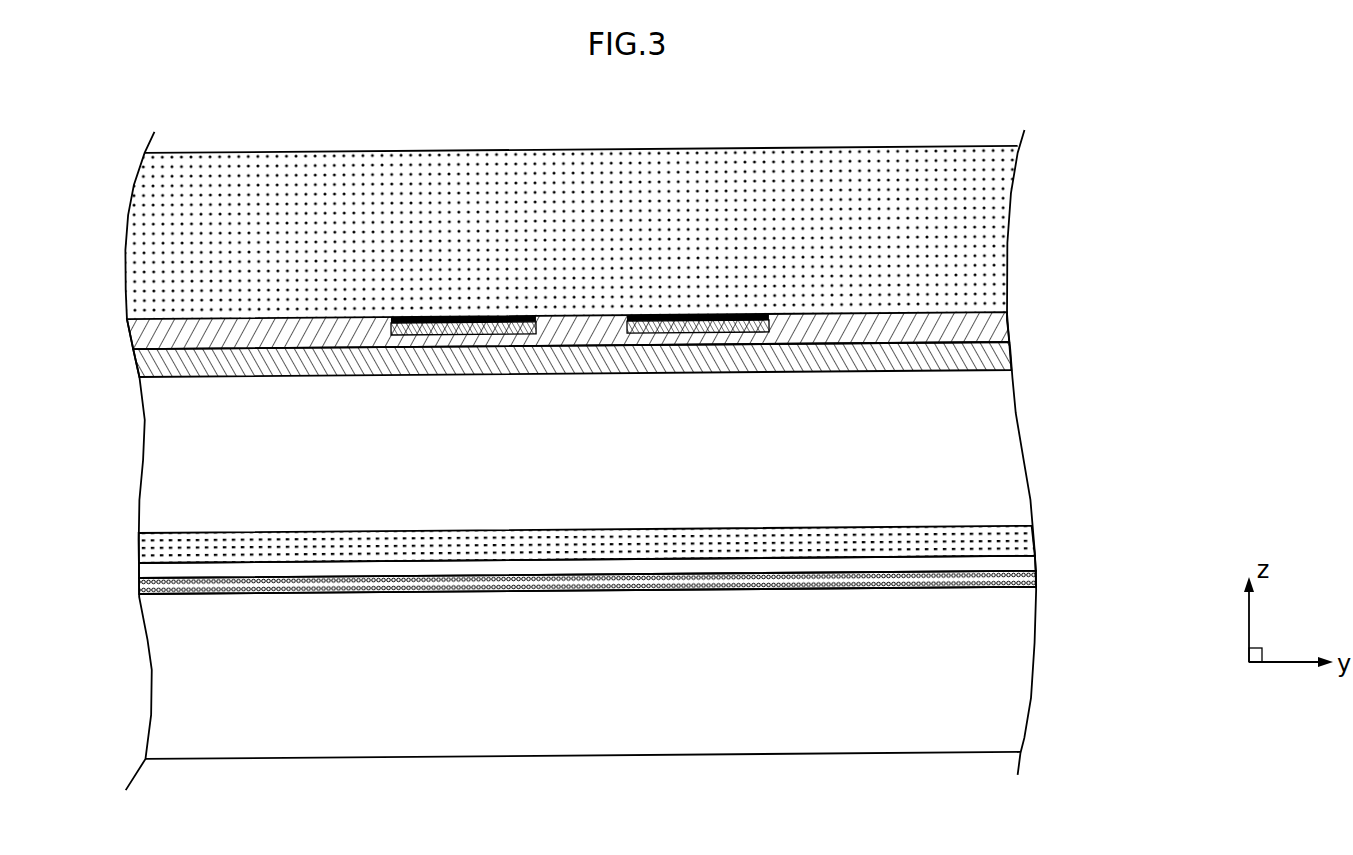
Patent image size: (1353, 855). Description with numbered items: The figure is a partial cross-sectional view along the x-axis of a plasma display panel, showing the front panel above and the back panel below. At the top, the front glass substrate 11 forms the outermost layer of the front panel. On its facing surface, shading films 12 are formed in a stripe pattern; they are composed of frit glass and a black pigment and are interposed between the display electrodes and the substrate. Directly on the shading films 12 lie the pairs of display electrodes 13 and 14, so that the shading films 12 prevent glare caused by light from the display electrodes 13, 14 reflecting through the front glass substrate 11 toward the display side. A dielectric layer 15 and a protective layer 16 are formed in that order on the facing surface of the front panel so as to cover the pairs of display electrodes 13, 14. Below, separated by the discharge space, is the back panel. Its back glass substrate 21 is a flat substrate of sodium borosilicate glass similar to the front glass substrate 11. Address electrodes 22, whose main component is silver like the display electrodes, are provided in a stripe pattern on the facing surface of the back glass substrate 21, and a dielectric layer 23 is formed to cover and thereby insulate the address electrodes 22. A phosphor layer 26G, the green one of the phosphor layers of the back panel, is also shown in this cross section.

The front glass substrate 11 is at (205, 236).
The shading films 12 is at (485, 320).
The display electrode 13 is at (438, 322).
The display electrode 14 is at (742, 322).
The dielectric layer 15 is at (177, 338).
The protective layer 16 is at (177, 360).
The back glass substrate 21 is at (177, 683).
The address electrodes 22 is at (138, 598).
The dielectric layer 23 is at (145, 573).
The phosphor layer 26G is at (148, 550).